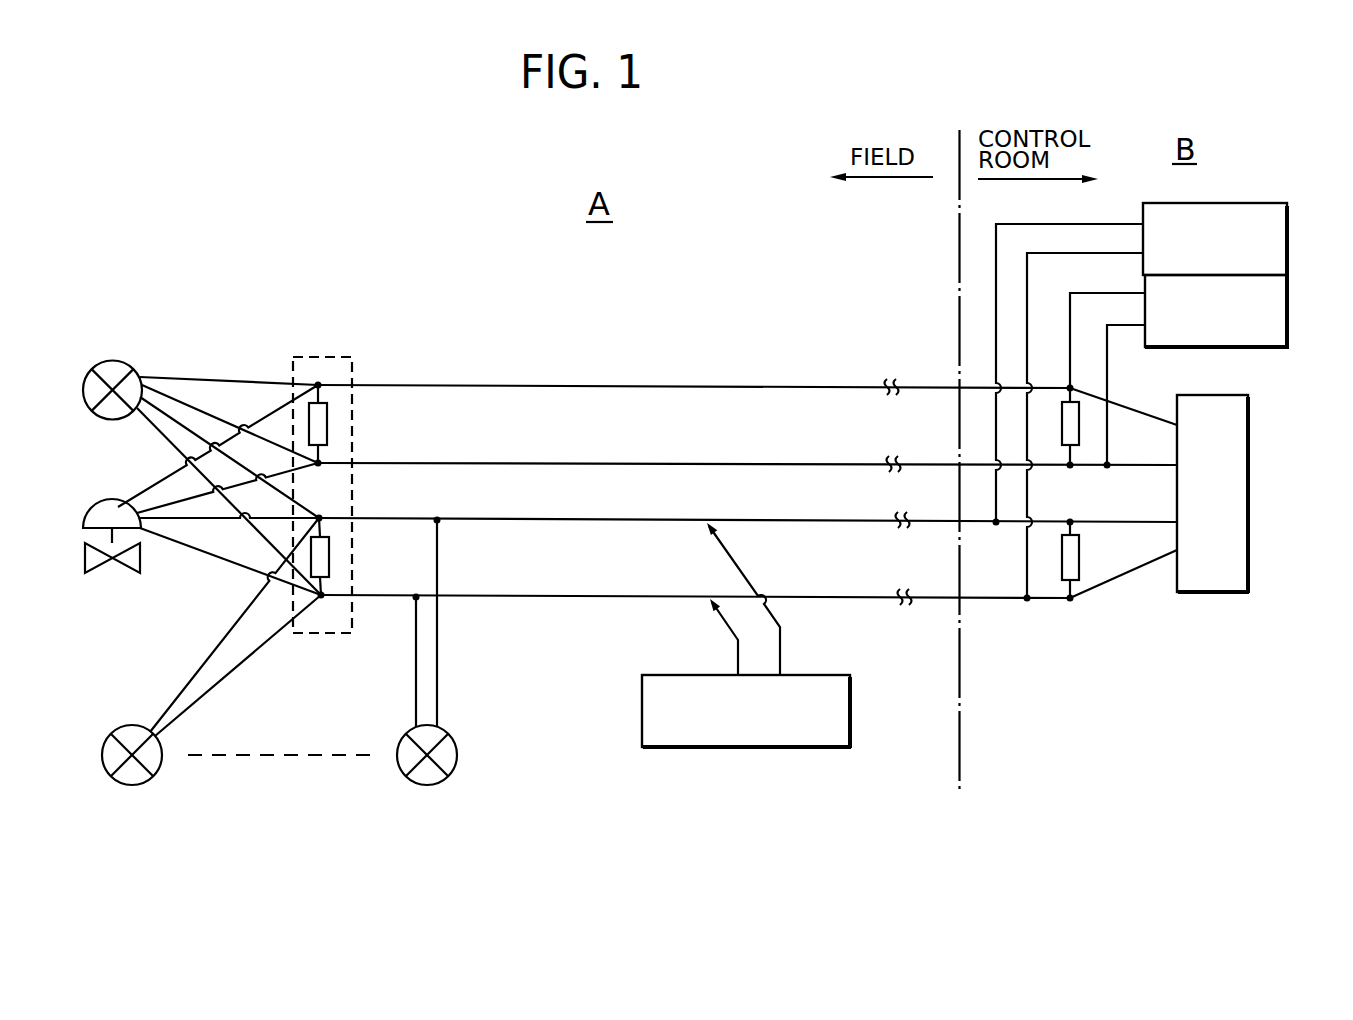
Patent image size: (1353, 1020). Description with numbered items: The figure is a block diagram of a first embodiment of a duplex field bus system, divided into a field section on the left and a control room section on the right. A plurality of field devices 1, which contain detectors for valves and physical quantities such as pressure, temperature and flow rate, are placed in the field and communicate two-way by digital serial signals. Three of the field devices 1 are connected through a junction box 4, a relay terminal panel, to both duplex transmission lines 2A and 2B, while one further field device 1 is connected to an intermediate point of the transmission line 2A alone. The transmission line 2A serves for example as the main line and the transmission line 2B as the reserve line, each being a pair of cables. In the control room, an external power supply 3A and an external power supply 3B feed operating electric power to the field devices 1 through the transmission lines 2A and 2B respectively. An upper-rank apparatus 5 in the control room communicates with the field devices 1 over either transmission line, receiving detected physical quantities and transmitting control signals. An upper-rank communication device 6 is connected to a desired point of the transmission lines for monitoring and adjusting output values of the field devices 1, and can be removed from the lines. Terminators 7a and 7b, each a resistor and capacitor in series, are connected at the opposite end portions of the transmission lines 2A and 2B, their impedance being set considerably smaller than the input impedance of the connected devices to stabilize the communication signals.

The field device 1 is at (112, 361).
The transmission line 2A is at (562, 610).
The transmission line 2B is at (551, 376).
The external power supply 3A is at (1281, 204).
The external power supply 3B is at (1284, 348).
The junction box 4 is at (323, 357).
The upper-rank apparatus 5 is at (1248, 525).
The upper-rank communication device 6 is at (758, 750).
The terminator 7a is at (329, 548).
The terminator 7b is at (327, 419).